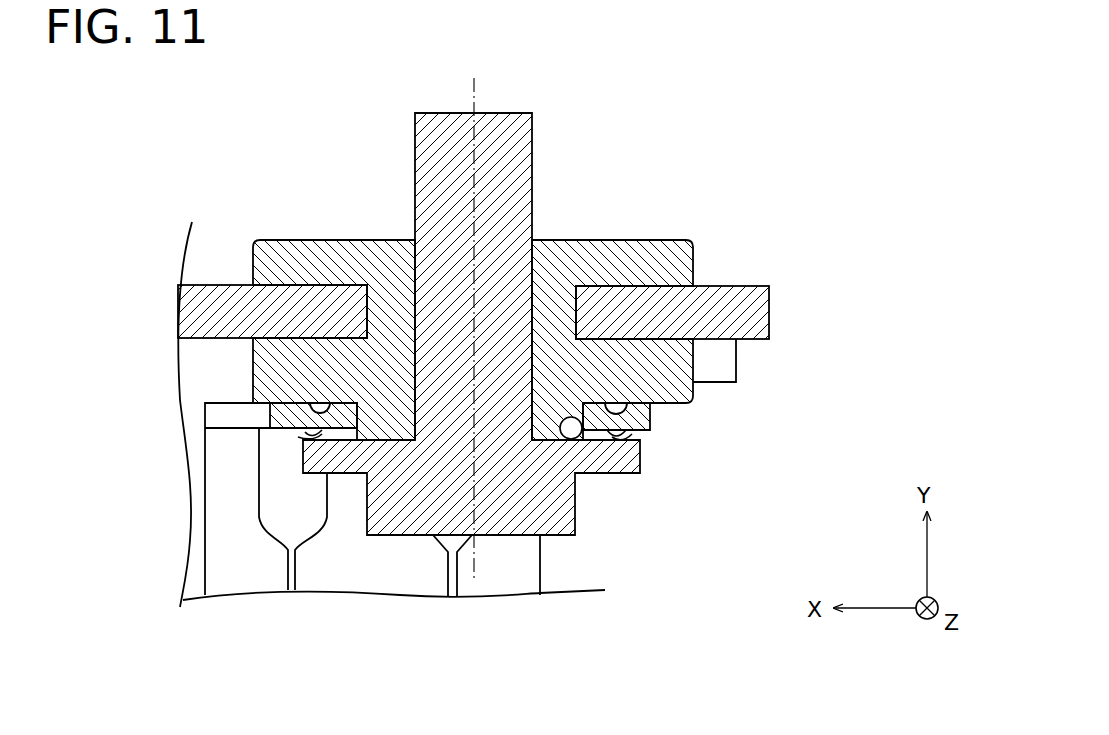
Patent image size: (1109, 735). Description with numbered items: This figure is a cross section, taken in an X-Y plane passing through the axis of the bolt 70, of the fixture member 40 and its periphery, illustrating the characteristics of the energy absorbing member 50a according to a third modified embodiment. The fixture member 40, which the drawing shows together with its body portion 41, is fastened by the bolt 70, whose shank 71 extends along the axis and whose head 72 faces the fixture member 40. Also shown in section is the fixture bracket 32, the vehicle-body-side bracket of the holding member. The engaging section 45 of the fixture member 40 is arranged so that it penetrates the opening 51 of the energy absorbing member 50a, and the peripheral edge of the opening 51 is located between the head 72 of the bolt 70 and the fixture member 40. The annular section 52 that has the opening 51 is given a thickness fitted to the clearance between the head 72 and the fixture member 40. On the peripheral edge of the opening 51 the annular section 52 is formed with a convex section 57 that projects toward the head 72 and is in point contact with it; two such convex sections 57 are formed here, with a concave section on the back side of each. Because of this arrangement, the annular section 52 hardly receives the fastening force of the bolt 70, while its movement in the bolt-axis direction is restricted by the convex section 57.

The fixture member 40 is at (457, 276).
The hub body 41 is at (417, 310).
The engaging section 45 is at (377, 420).
The bolt 70 is at (477, 318).
The shaft 71 is at (495, 243).
The head 72 is at (570, 465).
The fixture bracket 32 is at (727, 300).
The annular section 52 is at (633, 430).
The convex section 57 is at (313, 432).
The opening 51 is at (573, 437).
The energy absorbing member 50a is at (540, 563).